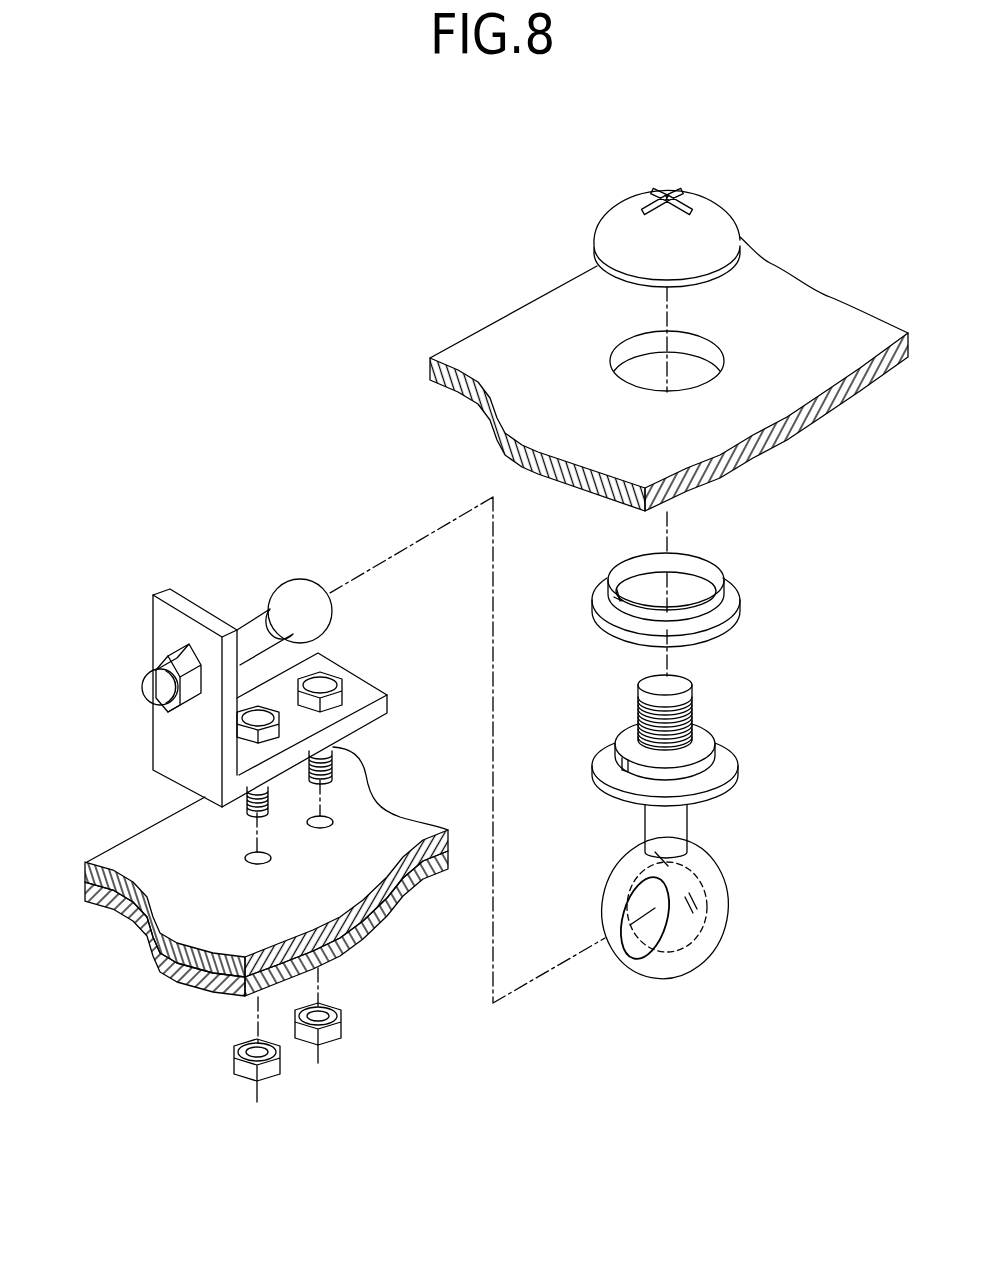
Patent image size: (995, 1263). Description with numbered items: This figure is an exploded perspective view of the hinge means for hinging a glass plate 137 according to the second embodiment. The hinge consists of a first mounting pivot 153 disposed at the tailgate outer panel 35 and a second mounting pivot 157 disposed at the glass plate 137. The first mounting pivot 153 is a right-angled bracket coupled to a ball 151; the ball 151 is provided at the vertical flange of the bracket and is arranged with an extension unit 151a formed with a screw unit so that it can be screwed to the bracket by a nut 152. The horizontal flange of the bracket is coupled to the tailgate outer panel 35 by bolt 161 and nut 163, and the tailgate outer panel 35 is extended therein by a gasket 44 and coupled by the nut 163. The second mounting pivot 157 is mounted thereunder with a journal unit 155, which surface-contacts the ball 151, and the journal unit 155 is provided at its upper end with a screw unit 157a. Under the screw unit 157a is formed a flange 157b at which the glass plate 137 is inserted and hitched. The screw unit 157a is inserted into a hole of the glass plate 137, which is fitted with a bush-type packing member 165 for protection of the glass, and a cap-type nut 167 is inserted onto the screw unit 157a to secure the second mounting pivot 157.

The glass plate 137 is at (517, 347).
The cap-type nut 167 is at (627, 225).
The bush-type packing member 165 is at (737, 625).
The screw unit 157a is at (635, 710).
The flange 157b is at (728, 758).
The second mounting pivot 157 is at (677, 825).
The journal unit 155 is at (717, 923).
The first mounting pivot 153 is at (167, 753).
The ball 151 is at (300, 593).
The extension unit 151a is at (249, 627).
The nut 152 is at (188, 658).
The bolt 161 is at (333, 762).
The tailgate outer panel 35 is at (173, 888).
The gasket 44 is at (203, 972).
The nut 163 is at (343, 1030).